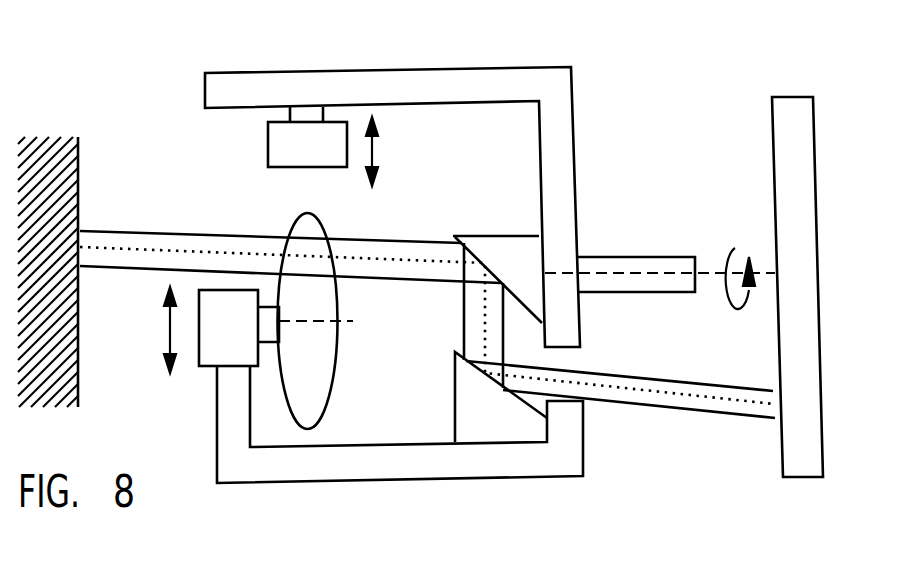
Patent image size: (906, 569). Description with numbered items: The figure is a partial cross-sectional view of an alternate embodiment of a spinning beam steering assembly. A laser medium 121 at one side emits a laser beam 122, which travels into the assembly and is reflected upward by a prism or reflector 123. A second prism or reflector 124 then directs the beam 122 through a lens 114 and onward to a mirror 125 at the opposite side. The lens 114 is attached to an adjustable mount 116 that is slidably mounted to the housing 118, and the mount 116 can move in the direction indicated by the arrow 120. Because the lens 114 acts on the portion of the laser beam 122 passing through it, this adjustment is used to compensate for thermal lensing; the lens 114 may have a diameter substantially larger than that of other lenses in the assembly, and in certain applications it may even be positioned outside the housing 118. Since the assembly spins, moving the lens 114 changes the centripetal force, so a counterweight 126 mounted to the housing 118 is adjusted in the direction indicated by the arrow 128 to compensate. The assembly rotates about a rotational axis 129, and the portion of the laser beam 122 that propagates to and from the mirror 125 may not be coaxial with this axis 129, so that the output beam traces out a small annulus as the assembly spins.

The lens 114 is at (338, 297).
The adjustable mount 116 is at (200, 291).
The housing 118 is at (575, 118).
The arrow 120 is at (167, 333).
The laser medium 121 is at (813, 117).
The laser beam 122 is at (233, 231).
The prism or reflector 123 is at (455, 400).
The prism or reflector 124 is at (515, 235).
The mirror 125 is at (80, 148).
The counterweight 126 is at (267, 146).
The arrow 128 is at (376, 150).
The rotational axis 129 is at (715, 272).